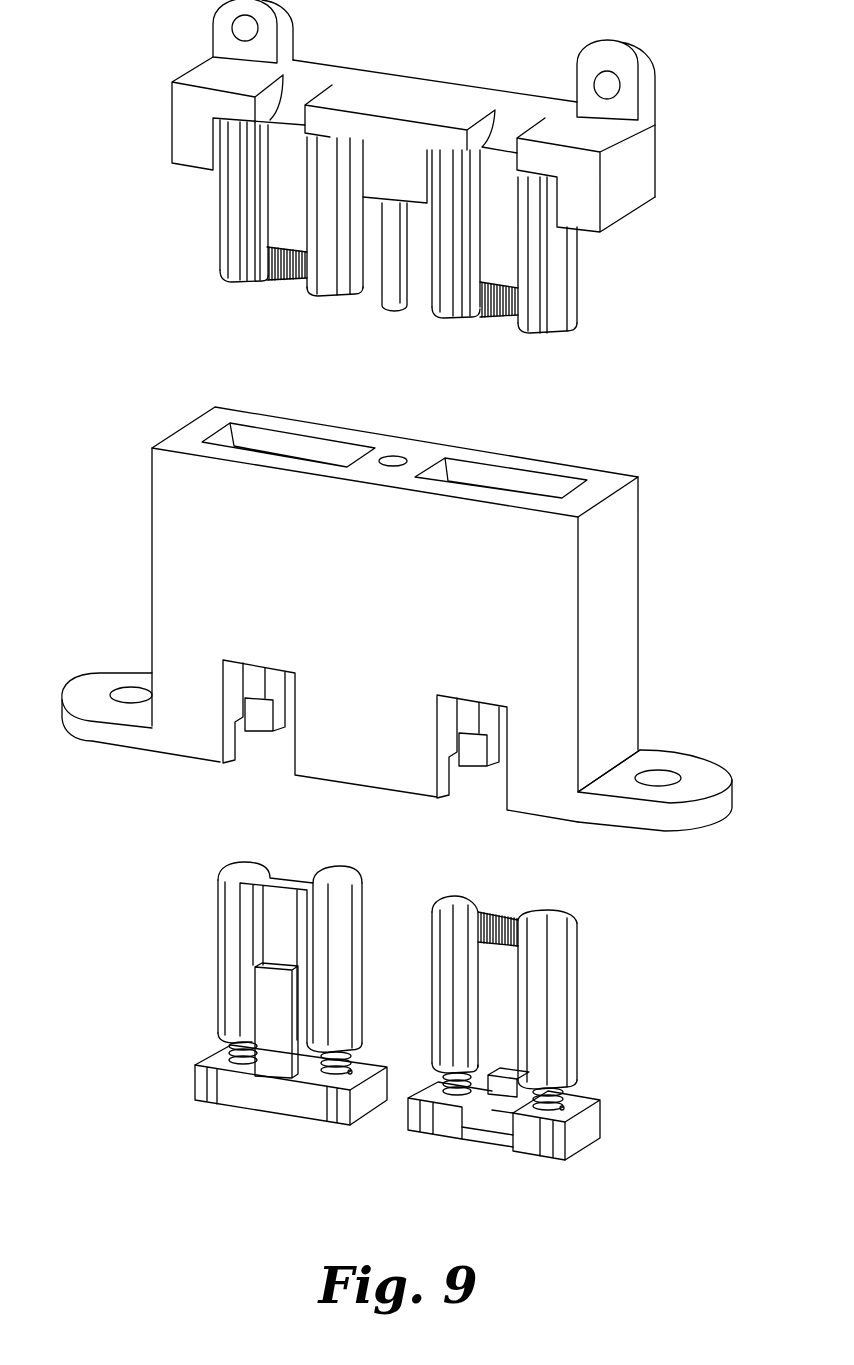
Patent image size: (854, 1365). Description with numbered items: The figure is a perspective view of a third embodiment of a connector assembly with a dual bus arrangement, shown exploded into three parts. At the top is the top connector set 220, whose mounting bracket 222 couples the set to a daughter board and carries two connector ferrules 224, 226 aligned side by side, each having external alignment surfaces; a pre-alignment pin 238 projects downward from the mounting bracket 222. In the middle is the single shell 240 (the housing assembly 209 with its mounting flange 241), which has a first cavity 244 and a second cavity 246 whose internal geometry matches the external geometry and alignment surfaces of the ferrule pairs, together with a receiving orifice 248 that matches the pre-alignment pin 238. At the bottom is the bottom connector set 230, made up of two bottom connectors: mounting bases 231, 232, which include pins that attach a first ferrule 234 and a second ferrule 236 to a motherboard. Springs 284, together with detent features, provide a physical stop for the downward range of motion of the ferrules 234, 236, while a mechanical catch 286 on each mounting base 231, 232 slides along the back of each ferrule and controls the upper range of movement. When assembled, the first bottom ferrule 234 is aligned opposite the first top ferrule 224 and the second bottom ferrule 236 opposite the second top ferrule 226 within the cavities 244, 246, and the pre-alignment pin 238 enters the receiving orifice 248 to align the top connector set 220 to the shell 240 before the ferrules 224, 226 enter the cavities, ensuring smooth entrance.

The top connector set 220 is at (163, 57).
The mounting bracket 222 is at (423, 88).
The connector ferrule 224 is at (573, 299).
The connector ferrule 226 is at (222, 251).
The pre-alignment pin 238 is at (402, 303).
The connector housing assembly 209 is at (633, 652).
The shell 240 is at (631, 558).
The mounting flange 241 is at (695, 769).
The first cavity 244 is at (537, 482).
The second cavity 246 is at (253, 440).
The receiving orifice 248 is at (400, 459).
The bottom connector set 230 is at (164, 1018).
The mounting base 231 is at (199, 1095).
The mounting base 232 is at (414, 1130).
The first ferrule 234 is at (573, 1008).
The second ferrule 236 is at (221, 915).
The springs 284 is at (583, 1100).
The mechanical catch 286 is at (274, 1068).